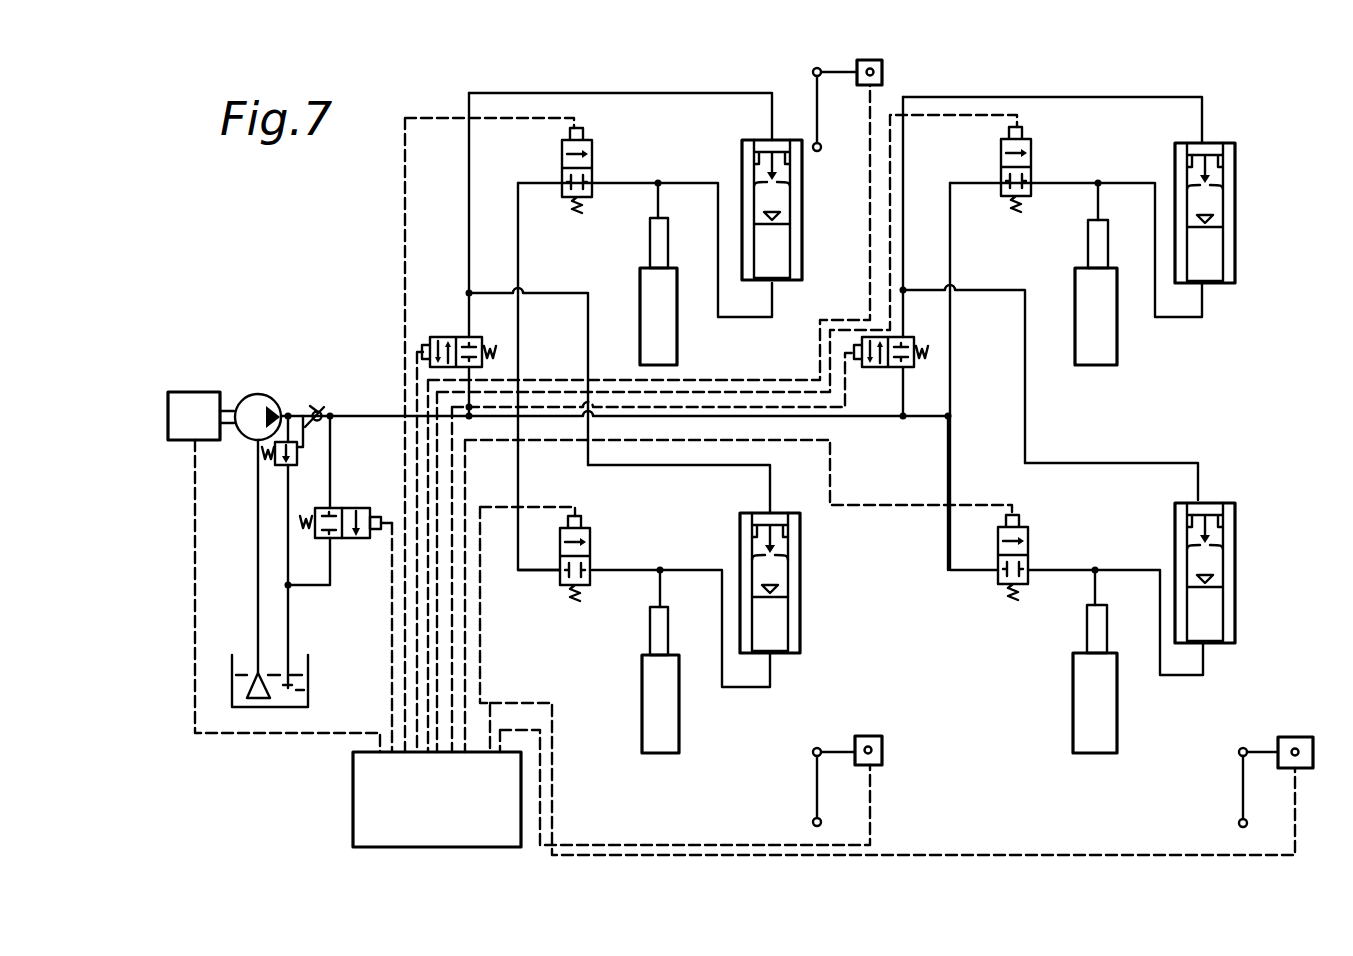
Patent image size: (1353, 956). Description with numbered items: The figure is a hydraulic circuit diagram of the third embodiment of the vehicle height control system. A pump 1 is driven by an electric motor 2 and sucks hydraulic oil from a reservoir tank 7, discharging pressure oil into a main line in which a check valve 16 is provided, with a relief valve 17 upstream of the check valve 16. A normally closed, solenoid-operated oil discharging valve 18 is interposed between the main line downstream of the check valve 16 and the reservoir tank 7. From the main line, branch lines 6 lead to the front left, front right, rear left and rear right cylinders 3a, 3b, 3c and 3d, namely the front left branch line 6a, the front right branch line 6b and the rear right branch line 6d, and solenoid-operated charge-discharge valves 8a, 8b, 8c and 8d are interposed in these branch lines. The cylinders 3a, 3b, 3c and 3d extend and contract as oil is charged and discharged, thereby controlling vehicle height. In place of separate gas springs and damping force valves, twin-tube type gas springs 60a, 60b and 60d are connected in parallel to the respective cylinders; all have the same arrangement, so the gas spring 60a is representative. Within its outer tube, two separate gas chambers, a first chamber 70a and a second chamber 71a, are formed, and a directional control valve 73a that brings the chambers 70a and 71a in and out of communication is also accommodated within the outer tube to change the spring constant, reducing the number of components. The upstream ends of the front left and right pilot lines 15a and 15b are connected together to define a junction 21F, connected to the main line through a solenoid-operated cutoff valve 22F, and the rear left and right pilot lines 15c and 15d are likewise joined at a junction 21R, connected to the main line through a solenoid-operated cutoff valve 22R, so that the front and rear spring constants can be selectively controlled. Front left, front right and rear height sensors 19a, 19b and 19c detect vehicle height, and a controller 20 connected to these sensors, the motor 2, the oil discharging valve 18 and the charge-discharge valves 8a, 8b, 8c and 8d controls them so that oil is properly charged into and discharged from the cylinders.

The pump 1 is at (270, 395).
The electric motor 2 is at (207, 392).
The front left cylinder 3a is at (642, 700).
The front right cylinder 3b is at (640, 305).
The rear left cylinder 3c is at (1073, 700).
The rear right cylinder 3d is at (1117, 362).
The branch lines 6 is at (947, 552).
The front left branch line 6a is at (542, 574).
The front right branch line 6b is at (518, 238).
The rear right branch line 6d is at (950, 240).
The reservoir tank 7 is at (308, 662).
The front left charge-discharge valve 8a is at (592, 538).
The front right charge-discharge valve 8b is at (592, 148).
The rear left charge-discharge valve 8c is at (1028, 540).
The rear right charge-discharge valve 8d is at (1032, 147).
The front left pilot line 15a is at (640, 466).
The front right pilot line 15b is at (665, 93).
The rear left pilot line 15c is at (1116, 463).
The rear right pilot line 15d is at (1098, 97).
The check valve 16 is at (322, 407).
The relief valve 17 is at (303, 461).
The oil discharging valve 18 is at (355, 539).
The front left height sensor 19a is at (882, 752).
The front right height sensor 19b is at (882, 72).
The rear height sensor 19c is at (1295, 737).
The controller 20 is at (353, 800).
The front junction 21F is at (469, 290).
The rear junction 21R is at (903, 288).
The front solenoid-operated cutoff valve 22F is at (437, 337).
The rear solenoid-operated cutoff valve 22R is at (912, 337).
The front left gas spring 60a is at (1235, 540).
The front right gas spring 60b is at (802, 198).
The rear right gas spring 60d is at (1237, 185).
The first gas chamber 70a is at (775, 575).
The second gas chamber 71a is at (788, 553).
The directional control valve 73a is at (788, 525).